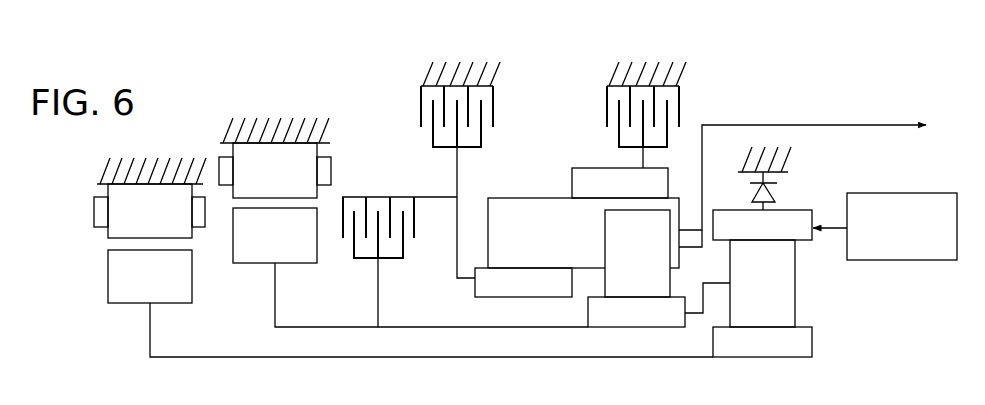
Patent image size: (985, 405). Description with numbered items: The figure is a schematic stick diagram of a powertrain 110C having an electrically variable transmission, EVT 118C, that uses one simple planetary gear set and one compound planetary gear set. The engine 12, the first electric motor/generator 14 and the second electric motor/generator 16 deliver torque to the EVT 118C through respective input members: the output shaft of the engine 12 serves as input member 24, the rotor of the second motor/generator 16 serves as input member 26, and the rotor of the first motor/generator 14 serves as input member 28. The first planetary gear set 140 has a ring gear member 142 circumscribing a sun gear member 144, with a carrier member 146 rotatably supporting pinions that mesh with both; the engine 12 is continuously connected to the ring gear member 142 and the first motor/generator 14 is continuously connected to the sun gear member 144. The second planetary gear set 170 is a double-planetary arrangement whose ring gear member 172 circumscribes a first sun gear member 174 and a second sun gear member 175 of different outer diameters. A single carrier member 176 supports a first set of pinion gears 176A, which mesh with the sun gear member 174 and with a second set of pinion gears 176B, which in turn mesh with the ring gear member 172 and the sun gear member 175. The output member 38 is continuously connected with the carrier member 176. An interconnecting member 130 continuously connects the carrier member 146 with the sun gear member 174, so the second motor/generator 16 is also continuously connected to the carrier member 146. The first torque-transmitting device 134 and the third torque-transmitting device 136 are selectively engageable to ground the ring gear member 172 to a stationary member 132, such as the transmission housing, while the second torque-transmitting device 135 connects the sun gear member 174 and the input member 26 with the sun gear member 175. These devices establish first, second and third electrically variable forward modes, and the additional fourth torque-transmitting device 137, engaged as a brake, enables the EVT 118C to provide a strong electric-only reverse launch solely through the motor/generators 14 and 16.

The engine 12 is at (892, 192).
The first electric motor/generator 14 is at (95, 241).
The second electric motor/generator 16 is at (226, 202).
The input member 24 is at (828, 225).
The input member 26 is at (275, 295).
The input member 28 is at (150, 325).
The output member 38 is at (813, 123).
The powertrain 110C is at (96, 273).
The electrically variable transmission (EVT) 118C is at (802, 148).
The interconnecting member 130 is at (700, 315).
The stationary member 132 is at (470, 72).
The first torque-transmitting device 134 is at (421, 107).
The second torque-transmitting device 135 is at (380, 195).
The third torque-transmitting device 136 is at (607, 107).
The fourth torque-transmitting device 137 is at (770, 193).
The first planetary gear set 140 is at (784, 297).
The ring gear member 142 is at (746, 235).
The sun gear member 144 is at (746, 352).
The carrier member 146 is at (746, 293).
The second planetary gear set 170 is at (580, 254).
The ring gear member 172 is at (604, 194).
The first sun gear member 174 is at (621, 323).
The second sun gear member 175 is at (507, 293).
The carrier member 176 is at (583, 297).
The first set of pinion gears 176A is at (614, 251).
The second set of pinion gears 176B is at (521, 243).